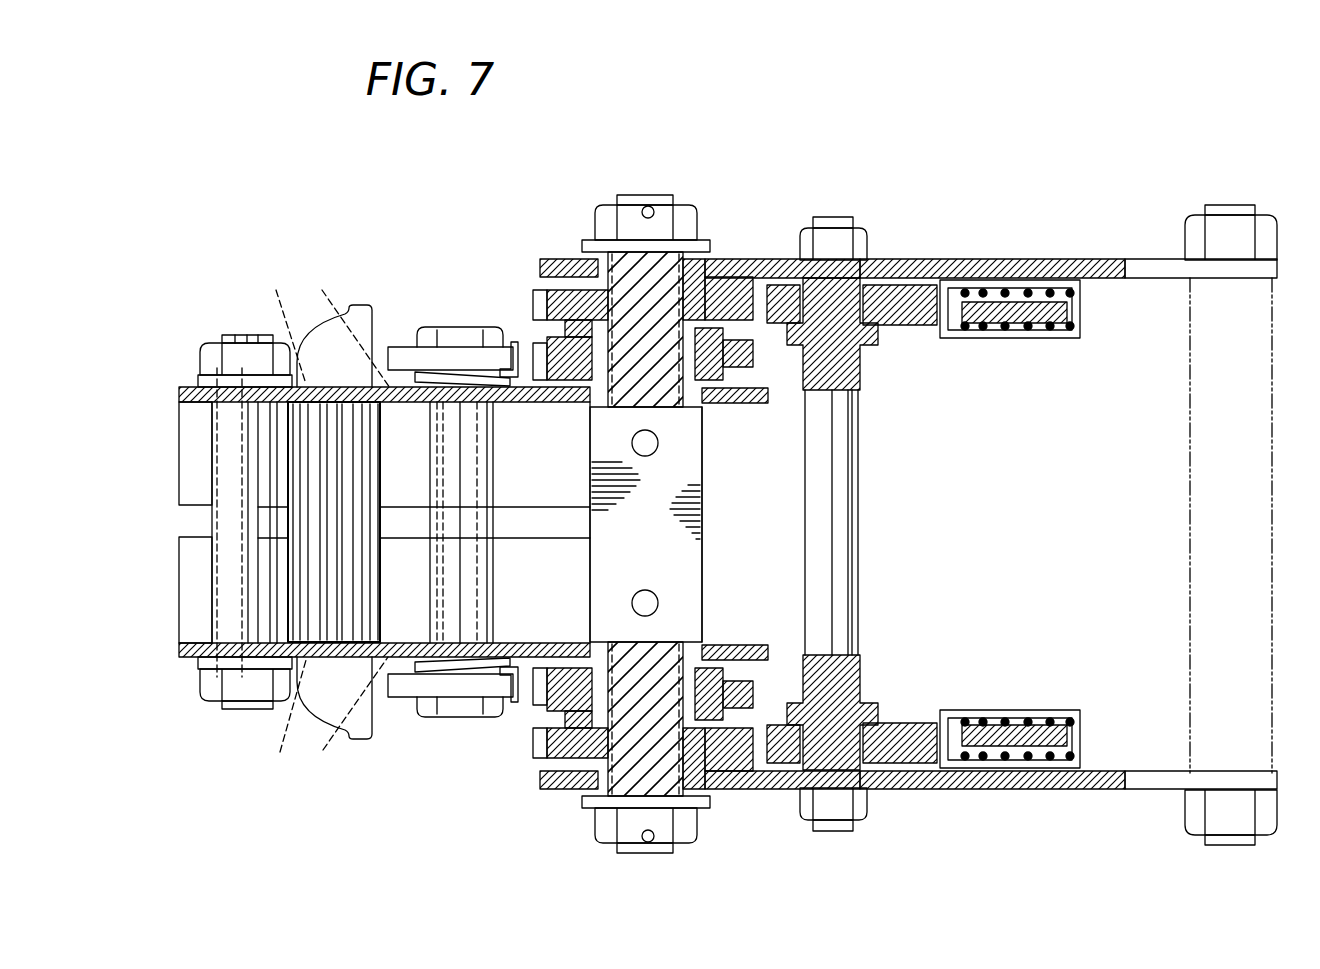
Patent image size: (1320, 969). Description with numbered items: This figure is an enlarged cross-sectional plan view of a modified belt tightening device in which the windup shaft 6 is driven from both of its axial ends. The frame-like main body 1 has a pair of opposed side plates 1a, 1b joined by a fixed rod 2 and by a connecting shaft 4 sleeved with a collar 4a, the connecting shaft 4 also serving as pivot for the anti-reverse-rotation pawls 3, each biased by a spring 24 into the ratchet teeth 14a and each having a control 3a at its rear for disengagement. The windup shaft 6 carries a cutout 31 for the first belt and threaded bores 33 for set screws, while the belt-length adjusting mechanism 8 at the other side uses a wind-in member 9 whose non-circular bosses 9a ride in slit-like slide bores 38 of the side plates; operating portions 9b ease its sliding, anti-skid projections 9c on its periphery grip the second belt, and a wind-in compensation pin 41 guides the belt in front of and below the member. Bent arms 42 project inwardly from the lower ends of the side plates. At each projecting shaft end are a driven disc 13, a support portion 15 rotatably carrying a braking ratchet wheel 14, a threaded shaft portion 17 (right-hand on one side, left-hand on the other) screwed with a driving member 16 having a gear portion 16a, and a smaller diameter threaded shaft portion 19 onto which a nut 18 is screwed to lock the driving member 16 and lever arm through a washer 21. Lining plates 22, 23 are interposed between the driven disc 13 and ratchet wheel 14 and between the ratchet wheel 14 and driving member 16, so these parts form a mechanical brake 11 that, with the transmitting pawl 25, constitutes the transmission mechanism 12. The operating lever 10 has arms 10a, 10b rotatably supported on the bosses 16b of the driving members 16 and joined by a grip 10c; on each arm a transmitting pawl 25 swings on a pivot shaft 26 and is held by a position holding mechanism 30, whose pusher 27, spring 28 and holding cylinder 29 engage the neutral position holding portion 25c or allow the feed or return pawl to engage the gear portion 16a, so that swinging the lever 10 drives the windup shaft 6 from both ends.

The main body 1 is at (178, 652).
The side plate 1a is at (192, 657).
The side plate 1b is at (190, 387).
The fixed rod 2 is at (212, 573).
The anti-reverse-rotation pawl 3 is at (425, 368).
The control 3a is at (398, 350).
The connecting shaft 4 is at (480, 500).
The collar 4a is at (493, 568).
The windup shaft 6 is at (706, 590).
The belt-length adjusting mechanism 8 is at (250, 712).
The wind-in member 9 is at (378, 612).
The boss 9a is at (276, 515).
The operating portion 9b is at (358, 305).
The anti-skid projections 9c is at (372, 452).
The operating lever 10 is at (1188, 460).
The arm 10a is at (1128, 789).
The arm 10b is at (1128, 262).
The grip 10c is at (1190, 540).
The mechanical brake 11 is at (528, 302).
The transmission mechanism 12 is at (765, 262).
The driven disc 13 is at (740, 368).
The braking ratchet wheel 14 is at (765, 378).
The ratchet teeth 14a is at (540, 381).
The support portion 15 is at (705, 380).
The driving member 16 is at (556, 290).
The gear portion 16a is at (546, 300).
The boss 16b is at (730, 278).
The threaded shaft portion 17 is at (612, 252).
The nut 18 is at (650, 207).
The smaller diameter threaded shaft portion 19 is at (627, 205).
The washer 21 is at (700, 245).
The lining plate 22 is at (760, 390).
The lining plate 23 is at (870, 326).
The spring 24 is at (455, 330).
The transmitting pawl 25 is at (907, 325).
The neutral position holding portion 25c is at (945, 338).
The pivot shaft 26 is at (855, 630).
The pusher 27 is at (1000, 302).
The spring 28 is at (1040, 288).
The holding cylinder 29 is at (965, 288).
The position holding mechanism 30 is at (948, 206).
The cutout 31 is at (705, 520).
The threaded bore 33 is at (658, 448).
The slide bore 38 is at (344, 515).
The wind-in compensation pin 41 is at (217, 617).
The bent arm 42 is at (178, 437).